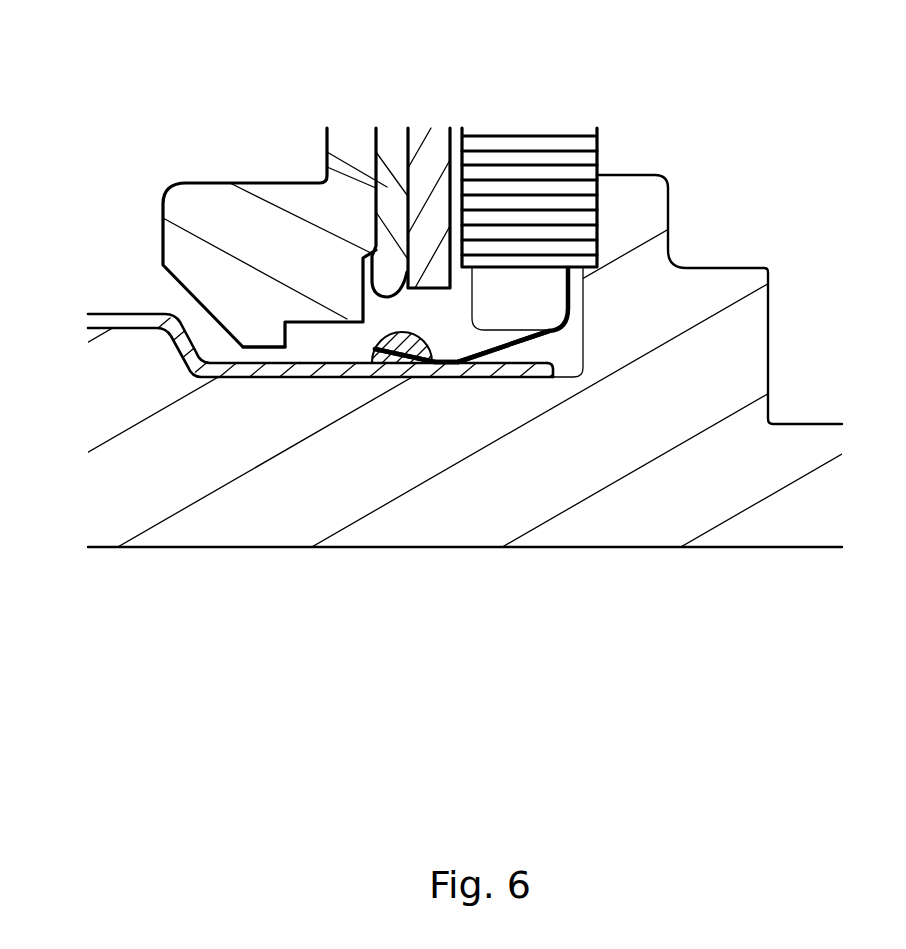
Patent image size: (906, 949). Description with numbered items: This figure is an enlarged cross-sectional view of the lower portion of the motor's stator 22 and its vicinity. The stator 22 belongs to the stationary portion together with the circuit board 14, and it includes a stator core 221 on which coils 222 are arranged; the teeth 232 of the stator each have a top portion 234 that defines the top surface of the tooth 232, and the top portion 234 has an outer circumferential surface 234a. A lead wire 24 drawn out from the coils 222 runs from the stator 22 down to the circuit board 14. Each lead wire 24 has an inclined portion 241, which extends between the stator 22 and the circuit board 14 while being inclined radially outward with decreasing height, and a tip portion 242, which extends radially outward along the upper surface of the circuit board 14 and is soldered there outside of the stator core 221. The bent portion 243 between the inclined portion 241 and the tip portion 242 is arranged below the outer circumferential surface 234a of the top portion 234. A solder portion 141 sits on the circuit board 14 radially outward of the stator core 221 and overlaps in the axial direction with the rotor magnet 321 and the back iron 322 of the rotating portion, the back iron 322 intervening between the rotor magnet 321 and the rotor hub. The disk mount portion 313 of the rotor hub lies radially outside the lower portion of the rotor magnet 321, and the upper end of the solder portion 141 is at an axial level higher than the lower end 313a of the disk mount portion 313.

The circuit board 14 is at (282, 368).
The solder portion 141 is at (365, 366).
The stator 22 is at (625, 211).
The stator core 221 is at (572, 190).
The coil 222 is at (553, 292).
The tooth 232 is at (541, 158).
The top portion 234 is at (472, 145).
The outer circumferential surface 234a is at (430, 183).
The lead wire 24 is at (553, 652).
The inclined portion 241 is at (510, 347).
The tip portion 242 is at (440, 365).
The bent portion 243 is at (466, 365).
The disk mount portion 313 is at (235, 207).
The lower end 313a is at (253, 343).
The rotor magnet 321 is at (385, 188).
The back iron 322 is at (327, 152).